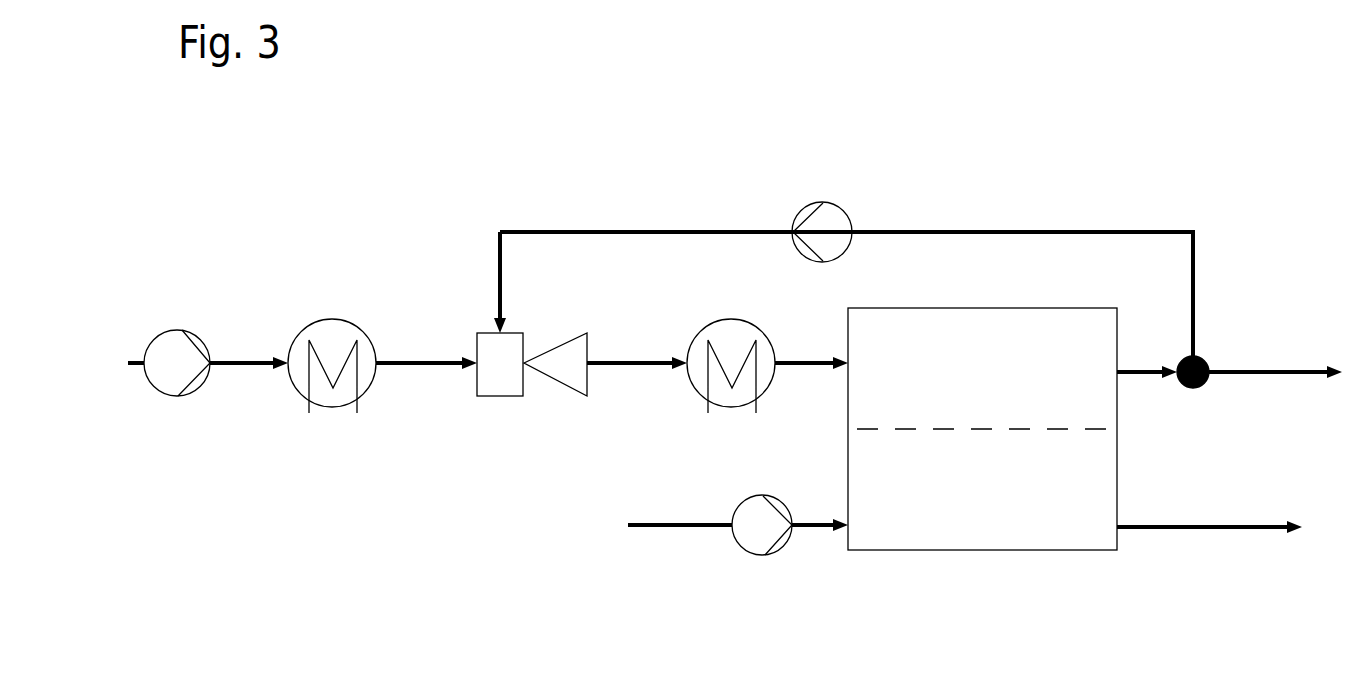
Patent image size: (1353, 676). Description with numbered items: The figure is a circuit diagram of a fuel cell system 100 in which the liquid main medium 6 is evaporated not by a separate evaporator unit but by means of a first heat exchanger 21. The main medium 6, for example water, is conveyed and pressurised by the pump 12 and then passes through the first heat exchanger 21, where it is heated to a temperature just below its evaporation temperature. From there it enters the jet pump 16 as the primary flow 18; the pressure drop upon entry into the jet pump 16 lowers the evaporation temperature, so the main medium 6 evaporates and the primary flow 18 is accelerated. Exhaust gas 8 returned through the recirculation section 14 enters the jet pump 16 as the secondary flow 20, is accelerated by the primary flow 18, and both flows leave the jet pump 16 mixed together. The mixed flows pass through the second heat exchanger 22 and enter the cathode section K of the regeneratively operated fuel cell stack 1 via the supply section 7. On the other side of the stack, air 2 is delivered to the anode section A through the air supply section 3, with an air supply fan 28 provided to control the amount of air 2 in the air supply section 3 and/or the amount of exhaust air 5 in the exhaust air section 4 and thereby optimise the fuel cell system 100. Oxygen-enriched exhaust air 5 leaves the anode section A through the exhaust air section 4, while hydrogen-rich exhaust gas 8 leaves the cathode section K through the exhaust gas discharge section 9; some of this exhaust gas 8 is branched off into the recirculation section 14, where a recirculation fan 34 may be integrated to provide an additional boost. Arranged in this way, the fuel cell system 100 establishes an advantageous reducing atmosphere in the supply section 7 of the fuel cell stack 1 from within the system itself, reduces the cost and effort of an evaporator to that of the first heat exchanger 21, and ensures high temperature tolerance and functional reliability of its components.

The fuel cell system 100 is at (401, 162).
The fuel cell stack 1 is at (922, 308).
The cathode section K is at (995, 350).
The anode section A is at (995, 550).
The air 2 is at (700, 527).
The air supply section 3 is at (838, 530).
The exhaust air section 4 is at (1120, 530).
The exhaust air 5 is at (1277, 540).
The main medium 6 is at (257, 370).
The supply section 7 is at (837, 358).
The exhaust gas 8 is at (1147, 365).
The exhaust gas discharge section 9 is at (1120, 358).
The pump 12 is at (198, 328).
The recirculation section 14 is at (1030, 232).
The jet pump 16 is at (495, 398).
The primary flow 18 is at (468, 373).
The secondary flow 20 is at (499, 310).
The first heat exchanger 21 is at (337, 327).
The second heat exchanger 22 is at (720, 318).
The air supply fan 28 is at (762, 555).
The recirculation fan 34 is at (817, 198).